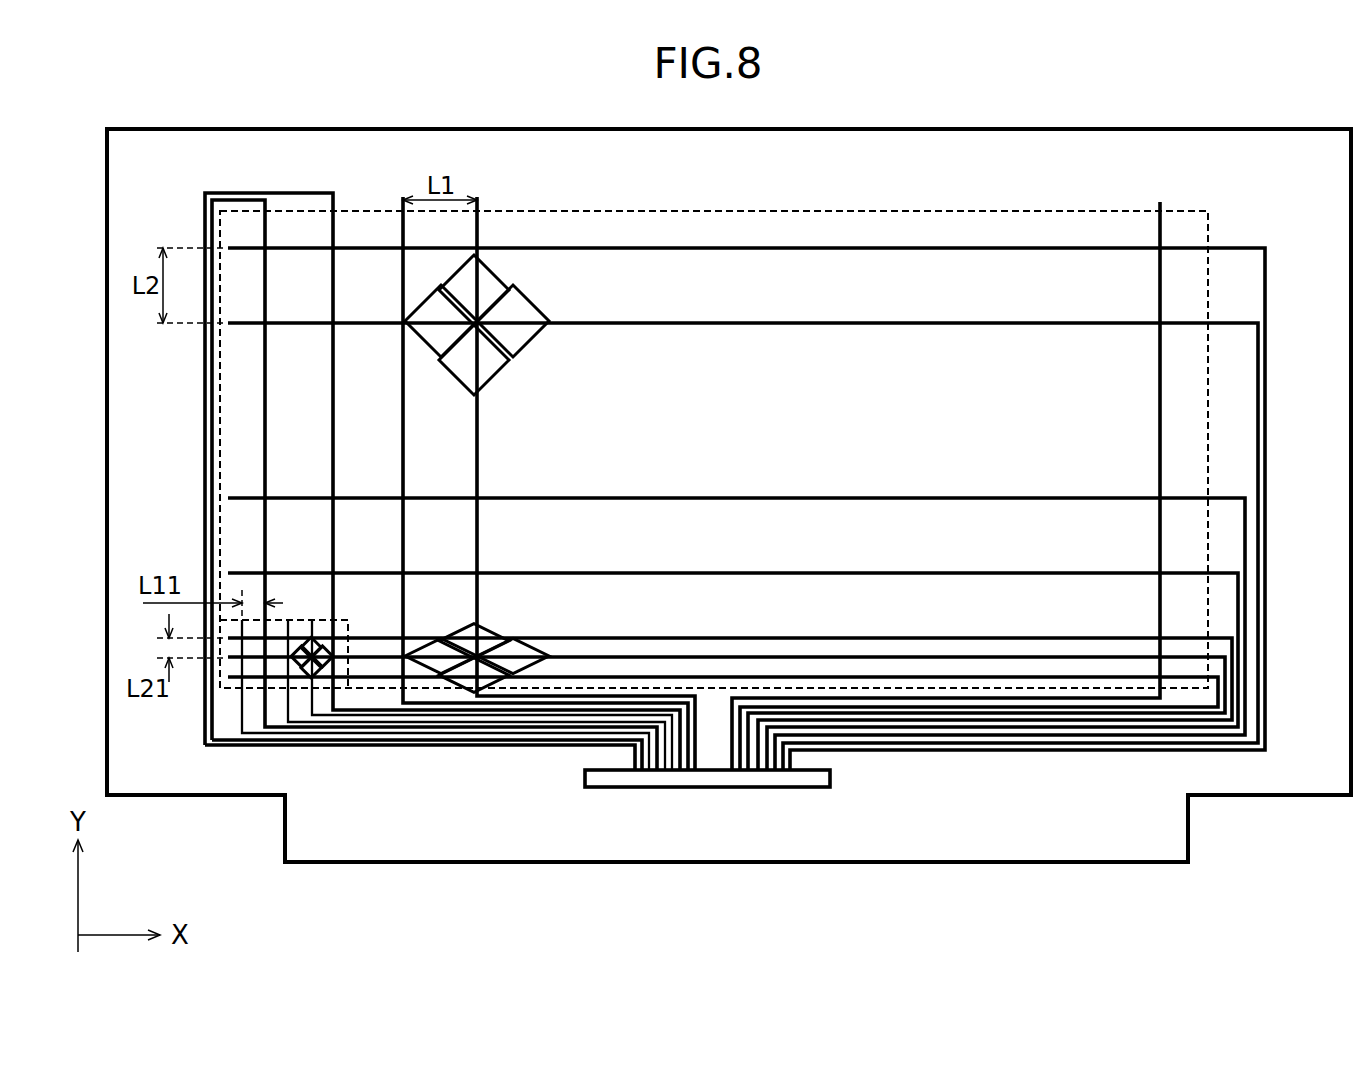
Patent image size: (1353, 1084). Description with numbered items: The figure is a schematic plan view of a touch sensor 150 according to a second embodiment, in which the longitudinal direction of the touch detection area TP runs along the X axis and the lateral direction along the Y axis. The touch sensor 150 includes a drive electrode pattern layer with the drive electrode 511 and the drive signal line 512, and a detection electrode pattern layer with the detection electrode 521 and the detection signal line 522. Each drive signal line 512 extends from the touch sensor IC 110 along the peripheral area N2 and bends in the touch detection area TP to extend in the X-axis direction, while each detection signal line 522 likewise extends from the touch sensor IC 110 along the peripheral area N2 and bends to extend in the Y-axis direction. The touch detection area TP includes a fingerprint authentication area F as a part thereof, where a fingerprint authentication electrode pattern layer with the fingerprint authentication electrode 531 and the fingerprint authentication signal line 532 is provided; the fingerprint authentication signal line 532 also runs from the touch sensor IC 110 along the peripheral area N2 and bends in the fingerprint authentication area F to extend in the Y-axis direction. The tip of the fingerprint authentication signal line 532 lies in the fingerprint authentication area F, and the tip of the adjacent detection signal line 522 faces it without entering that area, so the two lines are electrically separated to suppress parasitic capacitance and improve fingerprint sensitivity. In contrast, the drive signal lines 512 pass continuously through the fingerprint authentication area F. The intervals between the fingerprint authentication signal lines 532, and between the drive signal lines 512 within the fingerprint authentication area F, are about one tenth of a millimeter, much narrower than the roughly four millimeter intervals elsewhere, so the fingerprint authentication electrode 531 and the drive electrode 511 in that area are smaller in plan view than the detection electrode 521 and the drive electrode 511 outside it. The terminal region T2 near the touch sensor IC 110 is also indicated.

The touch sensor 150 is at (1123, 114).
The touch detection area TP is at (526, 211).
The fingerprint authentication area F is at (327, 614).
The peripheral area N2 is at (108, 396).
The drive signal line 512 is at (700, 326).
The detection signal line 522 is at (333, 405).
The fingerprint authentication signal line 532 is at (309, 712).
The detection electrode 521 is at (490, 387).
The drive electrode 511 is at (522, 312).
The fingerprint authentication electrode 531 is at (308, 640).
The touch sensor IC 110 is at (612, 789).
The terminal portion T2 is at (852, 786).